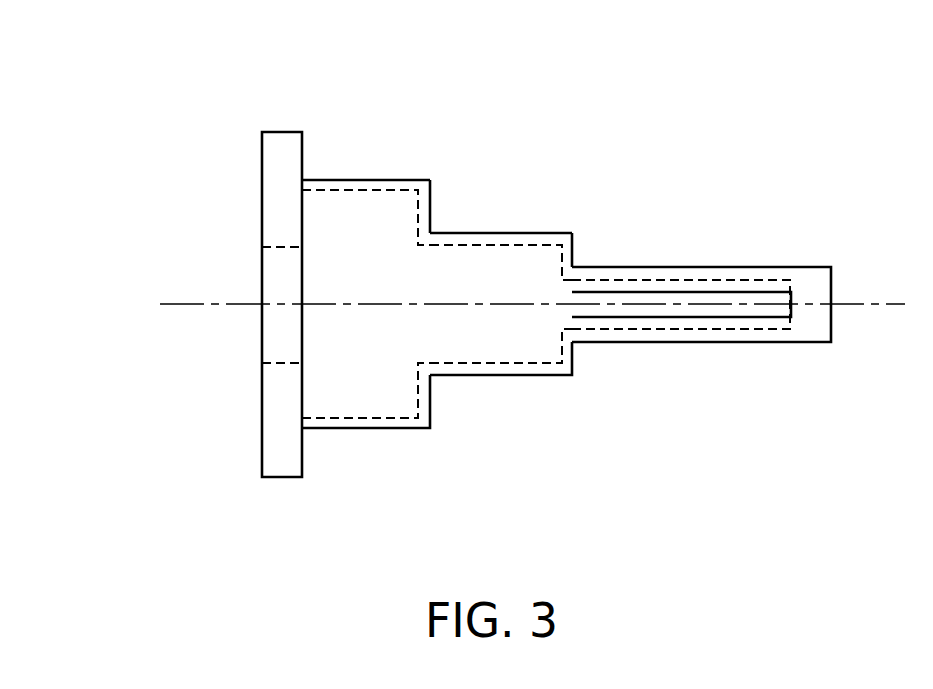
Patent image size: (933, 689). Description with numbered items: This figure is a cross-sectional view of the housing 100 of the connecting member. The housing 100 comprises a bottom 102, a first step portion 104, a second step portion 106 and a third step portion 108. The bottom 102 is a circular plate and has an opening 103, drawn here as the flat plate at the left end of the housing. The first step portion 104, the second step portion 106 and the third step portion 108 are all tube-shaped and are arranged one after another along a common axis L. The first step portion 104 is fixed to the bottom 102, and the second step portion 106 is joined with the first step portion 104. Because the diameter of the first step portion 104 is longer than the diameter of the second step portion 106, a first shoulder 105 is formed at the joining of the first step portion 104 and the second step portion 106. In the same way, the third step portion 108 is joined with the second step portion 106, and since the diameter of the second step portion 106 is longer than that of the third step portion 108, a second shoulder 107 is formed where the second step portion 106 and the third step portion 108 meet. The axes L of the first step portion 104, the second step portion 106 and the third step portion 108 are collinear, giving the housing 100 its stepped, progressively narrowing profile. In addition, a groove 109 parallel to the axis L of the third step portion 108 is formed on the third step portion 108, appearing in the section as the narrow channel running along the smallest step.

The housing 100 is at (114, 68).
The bottom 102 is at (263, 148).
The opening 103 is at (263, 332).
The first step portion 104 is at (367, 205).
The first shoulder 105 is at (429, 228).
The second step portion 106 is at (507, 258).
The second shoulder 107 is at (573, 262).
The third step portion 108 is at (703, 278).
The groove 109 is at (702, 310).
The axis L is at (896, 302).